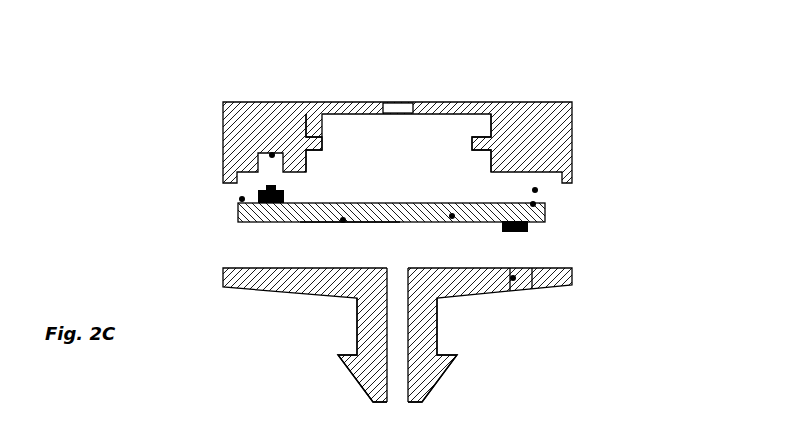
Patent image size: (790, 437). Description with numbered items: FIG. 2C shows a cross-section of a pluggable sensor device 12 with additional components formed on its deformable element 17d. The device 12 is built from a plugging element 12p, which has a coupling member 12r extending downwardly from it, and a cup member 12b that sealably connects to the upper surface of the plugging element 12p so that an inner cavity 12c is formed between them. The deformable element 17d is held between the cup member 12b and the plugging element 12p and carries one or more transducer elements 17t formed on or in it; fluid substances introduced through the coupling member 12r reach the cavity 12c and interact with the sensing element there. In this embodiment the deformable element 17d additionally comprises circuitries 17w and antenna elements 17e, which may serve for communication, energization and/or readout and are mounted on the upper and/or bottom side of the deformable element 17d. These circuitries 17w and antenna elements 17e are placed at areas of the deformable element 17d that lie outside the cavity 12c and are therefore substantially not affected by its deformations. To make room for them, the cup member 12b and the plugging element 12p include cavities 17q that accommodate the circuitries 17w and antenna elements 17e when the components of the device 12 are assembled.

The pluggable sensor device 12 is at (670, 131).
The cup member 12b is at (253, 130).
The inner cavity 12c is at (445, 140).
The plugging element 12p is at (320, 296).
The coupling member 12r is at (368, 377).
The cavities 17q is at (513, 278).
The circuitries 17w is at (262, 190).
The antenna elements 17e is at (242, 199).
The deformable element 17d is at (268, 218).
The transducer elements 17t is at (343, 220).